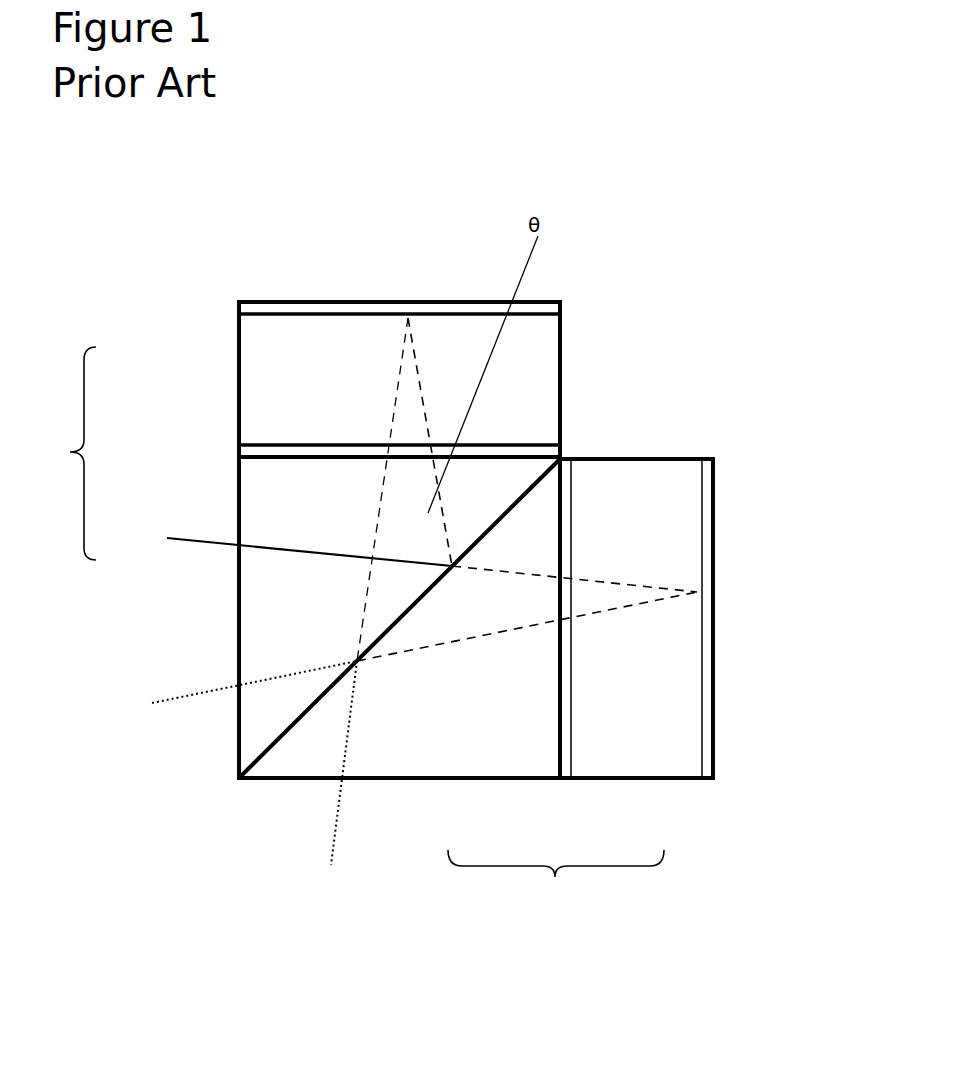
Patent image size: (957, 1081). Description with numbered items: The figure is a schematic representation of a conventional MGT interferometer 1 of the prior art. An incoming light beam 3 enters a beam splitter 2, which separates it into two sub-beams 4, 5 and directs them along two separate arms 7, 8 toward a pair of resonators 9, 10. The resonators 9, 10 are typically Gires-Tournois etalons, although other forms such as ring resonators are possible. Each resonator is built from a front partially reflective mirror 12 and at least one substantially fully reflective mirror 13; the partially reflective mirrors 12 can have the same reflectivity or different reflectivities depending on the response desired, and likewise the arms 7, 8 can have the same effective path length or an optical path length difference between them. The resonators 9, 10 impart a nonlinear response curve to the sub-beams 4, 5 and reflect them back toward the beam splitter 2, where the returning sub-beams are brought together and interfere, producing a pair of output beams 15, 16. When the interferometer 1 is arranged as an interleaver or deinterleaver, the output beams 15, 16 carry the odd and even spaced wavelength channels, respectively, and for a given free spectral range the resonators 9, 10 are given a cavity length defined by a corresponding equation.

The MGT interferometer 1 is at (628, 192).
The beam splitter 2 is at (222, 739).
The incoming light beam 3 is at (213, 537).
The sub-beam 4 is at (450, 517).
The sub-beam 5 is at (498, 577).
The arm 7 is at (60, 453).
The arm 8 is at (556, 887).
The resonator 9 is at (214, 354).
The resonator 10 is at (720, 434).
The front partially reflective mirror 12 is at (502, 445).
The substantially fully reflective mirror 13 is at (337, 303).
The output beam 15 is at (189, 692).
The output beam 16 is at (330, 813).